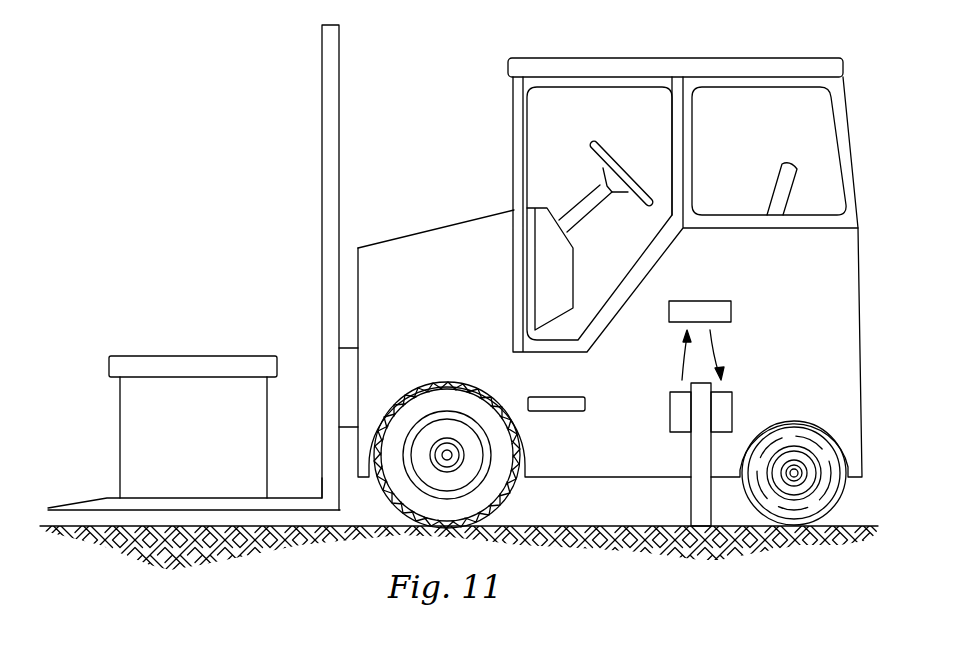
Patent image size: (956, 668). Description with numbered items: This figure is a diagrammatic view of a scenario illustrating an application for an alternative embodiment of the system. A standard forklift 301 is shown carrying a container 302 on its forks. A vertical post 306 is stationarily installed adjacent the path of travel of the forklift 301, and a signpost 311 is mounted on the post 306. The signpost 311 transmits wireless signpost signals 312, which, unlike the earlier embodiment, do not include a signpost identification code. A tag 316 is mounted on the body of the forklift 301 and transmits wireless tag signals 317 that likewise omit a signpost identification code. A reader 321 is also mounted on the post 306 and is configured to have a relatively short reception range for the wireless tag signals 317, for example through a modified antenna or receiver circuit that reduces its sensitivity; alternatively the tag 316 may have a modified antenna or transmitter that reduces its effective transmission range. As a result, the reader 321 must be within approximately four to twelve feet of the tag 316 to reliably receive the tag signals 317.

The forklift 301 is at (673, 57).
The container 302 is at (192, 353).
The vertical post 306 is at (690, 494).
The signpost 311 is at (668, 413).
The wireless signpost signals 312 is at (682, 353).
The tag 316 is at (700, 300).
The wireless tag signals 317 is at (716, 355).
The reader 321 is at (733, 412).